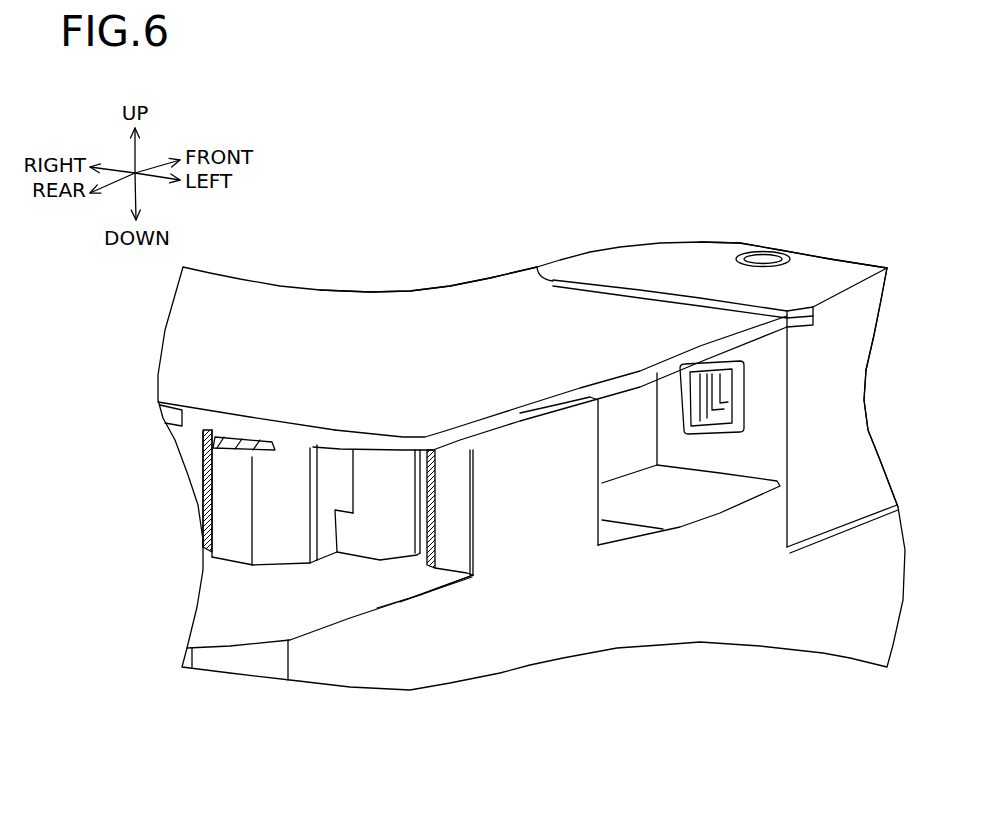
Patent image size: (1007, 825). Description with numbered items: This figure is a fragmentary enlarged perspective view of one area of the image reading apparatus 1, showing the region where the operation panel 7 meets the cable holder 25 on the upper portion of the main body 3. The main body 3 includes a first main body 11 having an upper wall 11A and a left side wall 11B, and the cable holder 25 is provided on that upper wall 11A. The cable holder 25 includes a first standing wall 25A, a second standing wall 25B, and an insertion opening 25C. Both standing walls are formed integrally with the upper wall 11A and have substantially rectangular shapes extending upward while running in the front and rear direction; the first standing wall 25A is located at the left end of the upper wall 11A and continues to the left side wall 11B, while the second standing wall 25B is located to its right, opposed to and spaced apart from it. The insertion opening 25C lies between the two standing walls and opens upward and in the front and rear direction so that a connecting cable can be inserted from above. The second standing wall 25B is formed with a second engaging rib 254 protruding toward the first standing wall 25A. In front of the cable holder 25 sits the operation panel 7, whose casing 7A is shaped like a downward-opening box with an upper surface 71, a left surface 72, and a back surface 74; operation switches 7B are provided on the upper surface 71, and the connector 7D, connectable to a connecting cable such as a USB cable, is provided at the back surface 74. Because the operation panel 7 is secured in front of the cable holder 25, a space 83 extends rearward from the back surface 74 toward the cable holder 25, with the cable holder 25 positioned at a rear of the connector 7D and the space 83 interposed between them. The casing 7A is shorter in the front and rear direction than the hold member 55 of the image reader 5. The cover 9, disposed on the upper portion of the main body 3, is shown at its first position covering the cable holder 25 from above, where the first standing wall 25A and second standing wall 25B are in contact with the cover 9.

The image reading apparatus 1 is at (612, 198).
The main body 3 is at (263, 617).
The image reader 5 is at (233, 470).
The hold member 55 is at (275, 468).
The operation panel 7 is at (836, 255).
The casing 7A is at (866, 466).
The operation switches 7B is at (757, 243).
The connector 7D is at (695, 387).
The upper surface 71 is at (699, 274).
The left surface 72 is at (857, 345).
The back surface 74 is at (773, 430).
The cover 9 is at (478, 298).
The first main body 11 is at (824, 650).
The upper wall 11A is at (218, 628).
The left side wall 11B is at (562, 636).
The cable holder 25 is at (480, 427).
The first standing wall 25A is at (520, 452).
The second standing wall 25B is at (380, 463).
The insertion opening 25C is at (420, 462).
The second engaging rib 254 is at (415, 545).
The space 83 is at (693, 482).